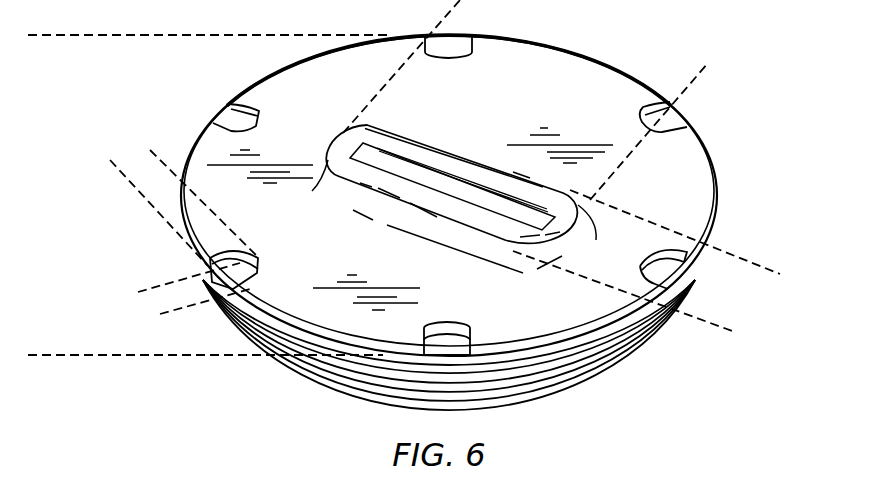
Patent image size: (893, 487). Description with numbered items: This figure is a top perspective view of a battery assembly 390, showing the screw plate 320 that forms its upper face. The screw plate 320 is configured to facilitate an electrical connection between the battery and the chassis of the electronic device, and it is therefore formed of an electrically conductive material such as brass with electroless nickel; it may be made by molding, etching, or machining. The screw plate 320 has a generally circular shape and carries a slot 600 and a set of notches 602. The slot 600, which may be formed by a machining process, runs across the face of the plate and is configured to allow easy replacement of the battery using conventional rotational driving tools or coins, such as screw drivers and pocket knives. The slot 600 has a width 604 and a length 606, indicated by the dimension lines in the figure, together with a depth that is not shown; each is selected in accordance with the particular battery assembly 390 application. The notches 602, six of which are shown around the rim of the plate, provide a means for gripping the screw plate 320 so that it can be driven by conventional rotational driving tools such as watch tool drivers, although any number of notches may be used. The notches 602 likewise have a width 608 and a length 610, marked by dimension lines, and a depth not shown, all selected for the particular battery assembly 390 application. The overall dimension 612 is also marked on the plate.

The screw plate 320 is at (712, 158).
The battery assembly 390 is at (712, 110).
The slot 600 is at (465, 141).
The notches 602 is at (229, 116).
The width 604 is at (760, 268).
The length 606 is at (470, 0).
The width 608 is at (180, 327).
The length 610 is at (187, 148).
The cap diameter dimension 612 is at (55, 35).